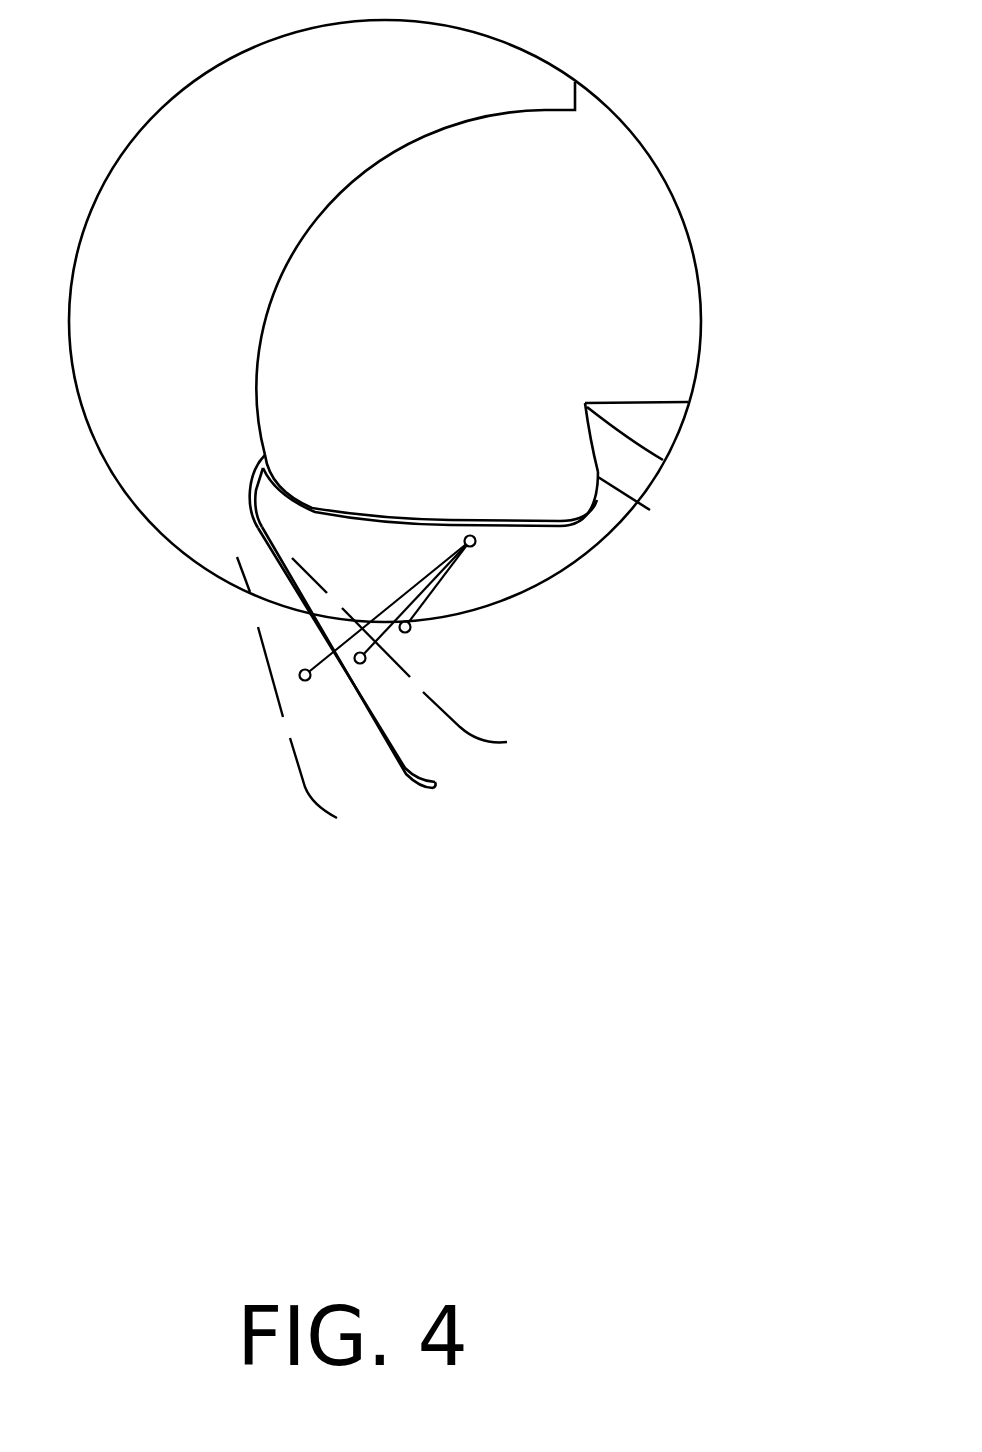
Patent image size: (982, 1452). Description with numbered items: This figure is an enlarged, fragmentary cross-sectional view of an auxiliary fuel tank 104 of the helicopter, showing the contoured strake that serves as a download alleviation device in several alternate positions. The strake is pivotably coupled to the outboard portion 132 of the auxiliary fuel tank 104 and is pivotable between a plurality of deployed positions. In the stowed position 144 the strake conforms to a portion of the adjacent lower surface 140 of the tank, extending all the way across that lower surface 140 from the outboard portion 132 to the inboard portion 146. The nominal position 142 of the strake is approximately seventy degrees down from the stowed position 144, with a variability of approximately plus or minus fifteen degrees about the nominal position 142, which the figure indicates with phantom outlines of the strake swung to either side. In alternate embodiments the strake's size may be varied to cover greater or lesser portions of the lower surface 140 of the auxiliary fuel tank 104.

The auxiliary fuel tank 104 is at (272, 298).
The outboard portion 132 is at (265, 457).
The lower surface 140 is at (565, 517).
The nominal position 142 is at (398, 755).
The stowed position 144 is at (552, 530).
The inboard portion 146 is at (650, 510).